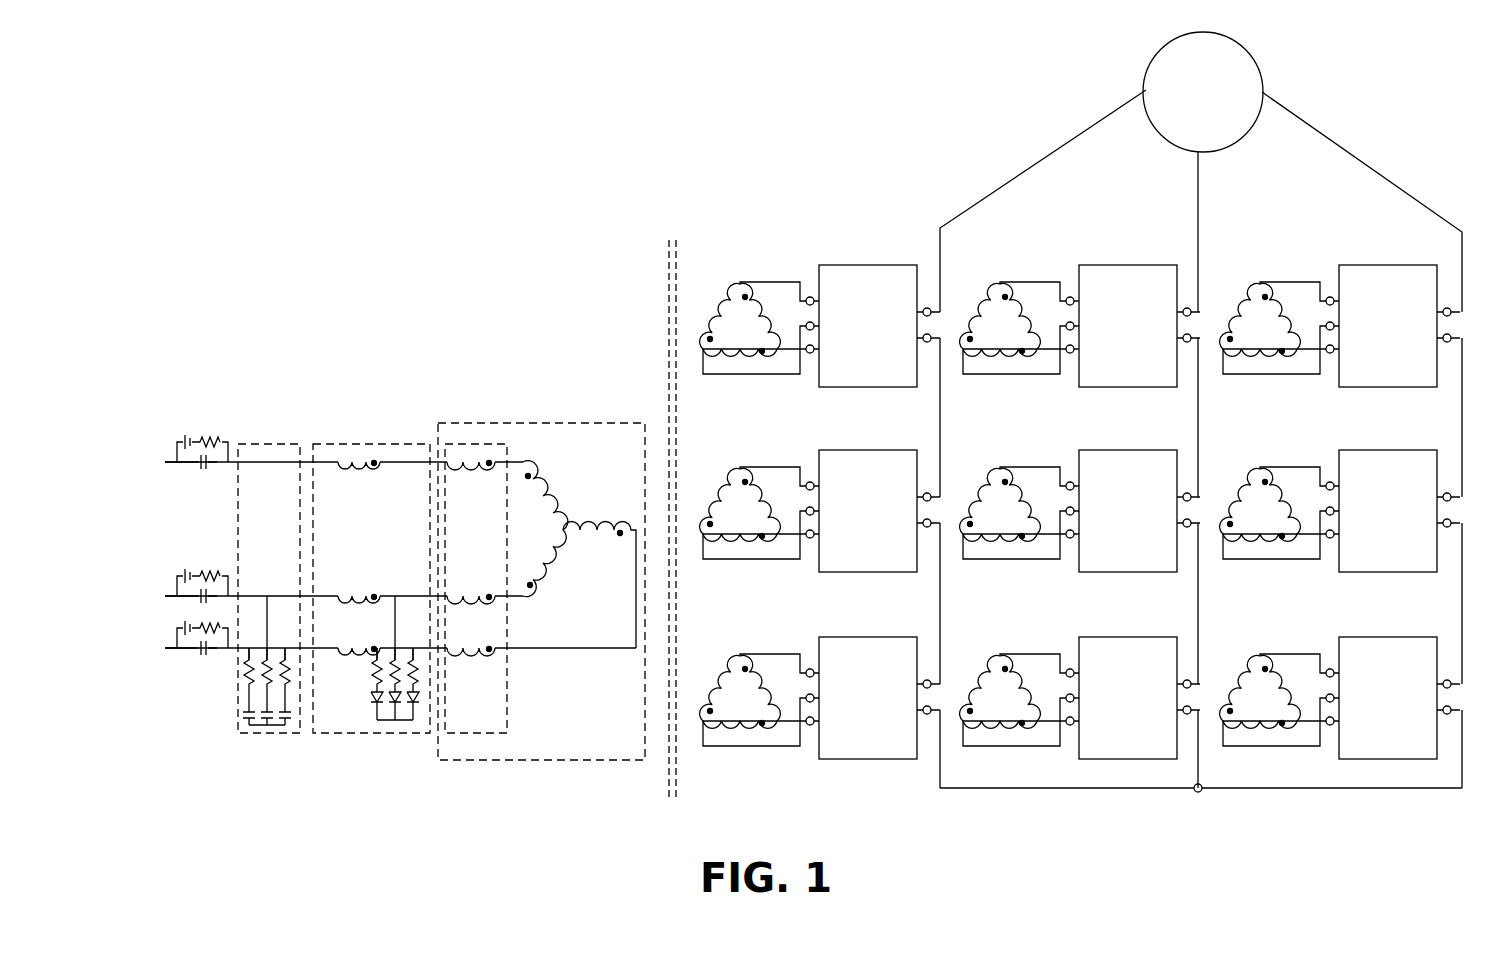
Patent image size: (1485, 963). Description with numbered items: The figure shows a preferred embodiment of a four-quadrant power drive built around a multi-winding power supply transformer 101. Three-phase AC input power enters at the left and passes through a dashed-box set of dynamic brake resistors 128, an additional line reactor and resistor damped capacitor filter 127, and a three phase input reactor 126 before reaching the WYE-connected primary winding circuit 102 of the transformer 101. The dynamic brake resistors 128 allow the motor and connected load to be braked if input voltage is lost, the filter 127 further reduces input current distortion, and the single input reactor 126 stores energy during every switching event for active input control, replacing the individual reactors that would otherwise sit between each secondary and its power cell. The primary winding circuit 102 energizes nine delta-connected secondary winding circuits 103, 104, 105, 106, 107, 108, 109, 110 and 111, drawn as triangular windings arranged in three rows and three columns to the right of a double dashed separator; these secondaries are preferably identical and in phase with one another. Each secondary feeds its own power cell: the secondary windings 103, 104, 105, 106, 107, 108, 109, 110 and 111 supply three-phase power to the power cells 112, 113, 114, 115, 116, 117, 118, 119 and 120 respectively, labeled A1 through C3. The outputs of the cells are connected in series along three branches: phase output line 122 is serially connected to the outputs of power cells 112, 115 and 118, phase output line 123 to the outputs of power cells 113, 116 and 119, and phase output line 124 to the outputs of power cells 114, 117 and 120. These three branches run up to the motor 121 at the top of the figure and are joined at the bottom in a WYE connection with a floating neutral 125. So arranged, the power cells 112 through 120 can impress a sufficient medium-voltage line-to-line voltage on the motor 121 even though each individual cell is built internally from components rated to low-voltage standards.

The power supply transformer 101 is at (572, 414).
The primary winding circuit 102 is at (588, 547).
The secondary winding circuit 103 is at (740, 284).
The secondary winding circuit 104 is at (1000, 284).
The secondary winding circuit 105 is at (1260, 284).
The secondary winding circuit 106 is at (740, 469).
The secondary winding circuit 107 is at (1000, 469).
The secondary winding circuit 108 is at (1260, 469).
The secondary winding circuit 109 is at (740, 656).
The secondary winding circuit 110 is at (1000, 656).
The secondary winding circuit 111 is at (1260, 656).
The power cell 112 is at (845, 275).
The power cell 113 is at (1105, 275).
The power cell 114 is at (1365, 275).
The power cell 115 is at (845, 460).
The power cell 116 is at (1105, 460).
The power cell 117 is at (1365, 460).
The power cell 118 is at (845, 647).
The power cell 119 is at (1105, 647).
The power cell 120 is at (1365, 647).
The motor 121 is at (1177, 46).
The phase output line 122 is at (1022, 170).
The phase output line 123 is at (1198, 180).
The phase output line 124 is at (1337, 147).
The floating neutral 125 is at (1201, 790).
The three phase input reactor 126 is at (482, 698).
The additional line reactor and resistor damped capacitor filter 127 is at (338, 718).
The dynamic brake resistors 128 is at (275, 731).